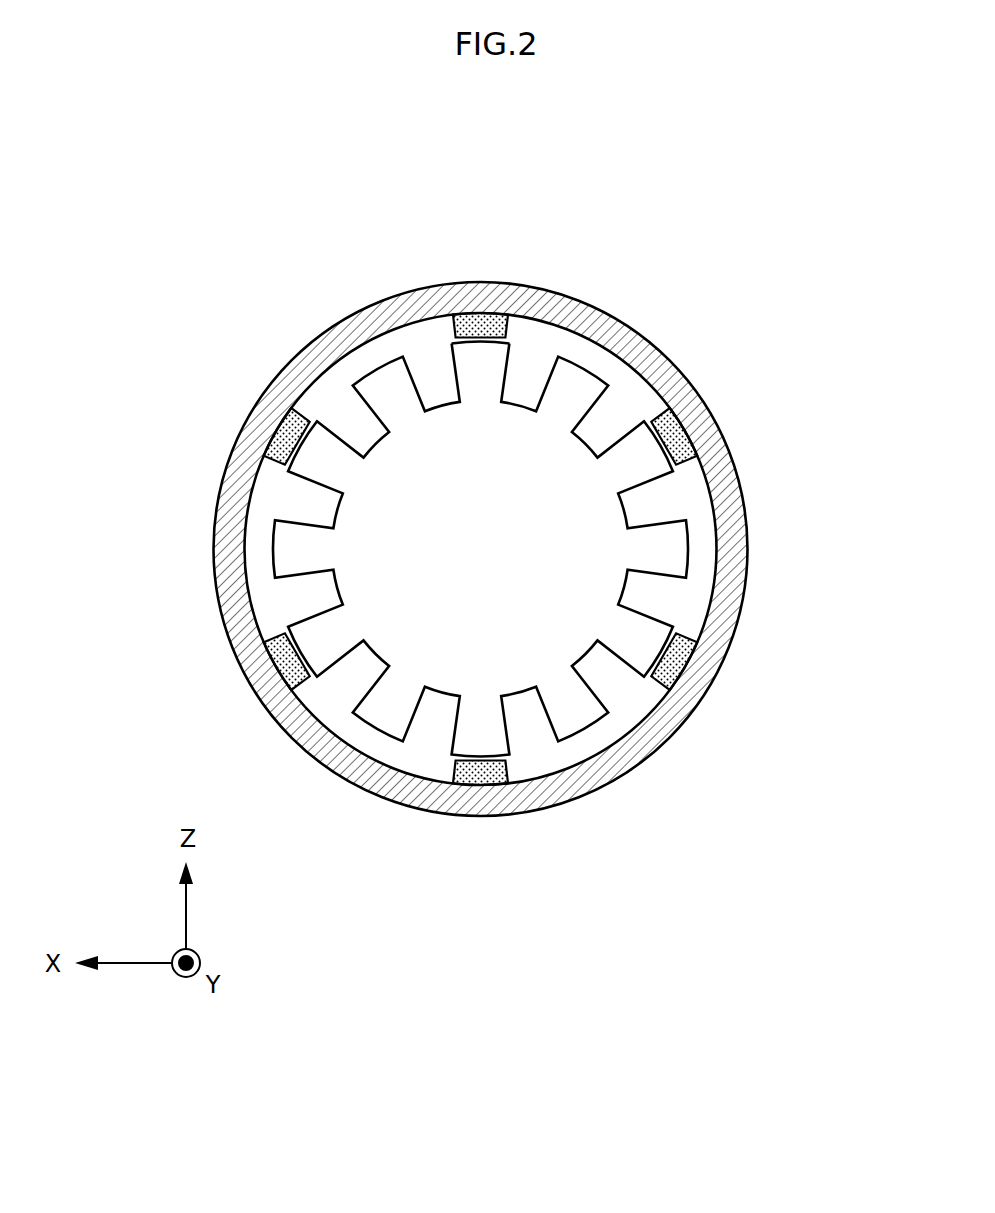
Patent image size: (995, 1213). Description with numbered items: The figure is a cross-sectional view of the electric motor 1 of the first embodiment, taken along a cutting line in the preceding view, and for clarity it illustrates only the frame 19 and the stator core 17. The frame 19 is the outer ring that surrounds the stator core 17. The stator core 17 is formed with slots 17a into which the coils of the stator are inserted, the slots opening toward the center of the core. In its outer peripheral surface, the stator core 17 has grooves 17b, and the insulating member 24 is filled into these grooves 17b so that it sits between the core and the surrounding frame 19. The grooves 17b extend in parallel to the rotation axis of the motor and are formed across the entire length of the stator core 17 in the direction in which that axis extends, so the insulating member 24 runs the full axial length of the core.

The electric motor 1 is at (481, 506).
The stator core 17 is at (633, 407).
The slot 17a is at (485, 375).
The groove 17b is at (468, 316).
The frame 19 is at (618, 336).
The insulating member 24 is at (490, 322).